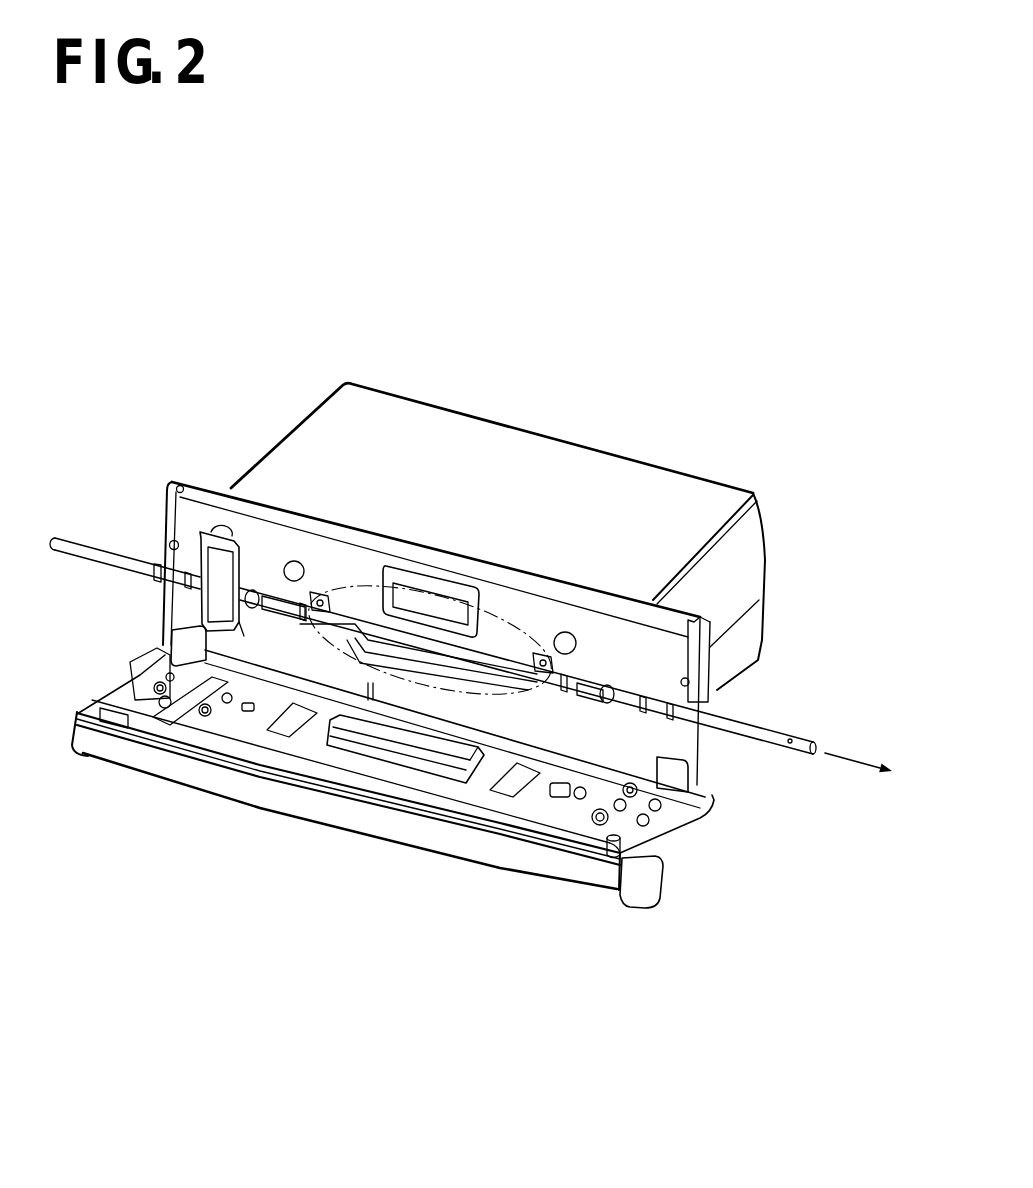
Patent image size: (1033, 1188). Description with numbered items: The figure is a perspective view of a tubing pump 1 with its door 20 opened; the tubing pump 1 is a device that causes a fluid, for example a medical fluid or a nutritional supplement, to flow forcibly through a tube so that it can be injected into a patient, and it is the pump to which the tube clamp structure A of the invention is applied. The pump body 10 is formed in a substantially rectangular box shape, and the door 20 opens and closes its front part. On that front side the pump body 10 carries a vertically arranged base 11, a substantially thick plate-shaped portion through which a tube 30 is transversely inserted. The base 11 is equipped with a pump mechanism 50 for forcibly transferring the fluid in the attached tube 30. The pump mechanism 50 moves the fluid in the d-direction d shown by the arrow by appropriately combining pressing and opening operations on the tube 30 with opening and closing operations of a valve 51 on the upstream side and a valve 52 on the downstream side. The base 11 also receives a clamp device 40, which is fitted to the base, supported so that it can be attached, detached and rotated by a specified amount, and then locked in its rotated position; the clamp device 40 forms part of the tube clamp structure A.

The tubing pump 1 is at (134, 291).
The pump body 10 is at (221, 486).
The base 11 is at (180, 482).
The door 20 is at (132, 778).
The tube 30 is at (783, 742).
The clamp device 40 is at (172, 607).
The pump mechanism 50 is at (481, 703).
The valve 51 is at (318, 593).
The valve 52 is at (543, 653).
The tube clamp structure A is at (238, 619).
The d-direction d is at (858, 746).